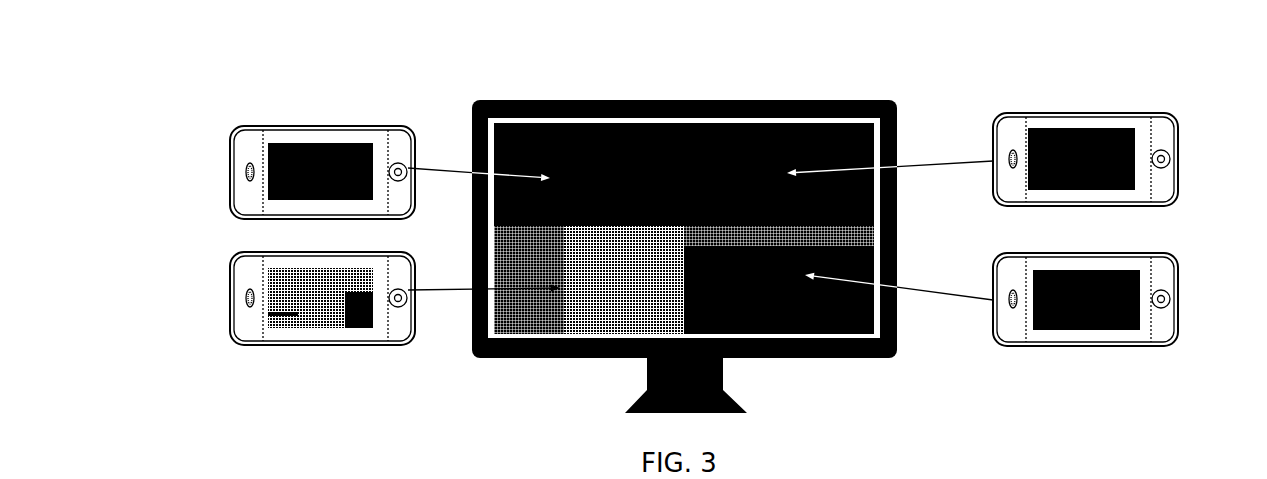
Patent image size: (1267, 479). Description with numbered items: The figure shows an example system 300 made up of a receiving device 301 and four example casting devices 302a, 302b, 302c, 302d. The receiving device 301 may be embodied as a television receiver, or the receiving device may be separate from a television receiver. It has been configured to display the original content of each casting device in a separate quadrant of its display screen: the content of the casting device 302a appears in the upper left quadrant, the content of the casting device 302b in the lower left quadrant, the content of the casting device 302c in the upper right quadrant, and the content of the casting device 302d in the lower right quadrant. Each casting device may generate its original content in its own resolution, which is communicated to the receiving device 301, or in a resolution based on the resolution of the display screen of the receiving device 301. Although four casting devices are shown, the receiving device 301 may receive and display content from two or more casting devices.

The system 300 is at (421, 72).
The receiving device 301 is at (827, 359).
The casting device 302a is at (231, 200).
The casting device 302b is at (231, 327).
The casting device 302c is at (1173, 196).
The casting device 302d is at (1173, 337).